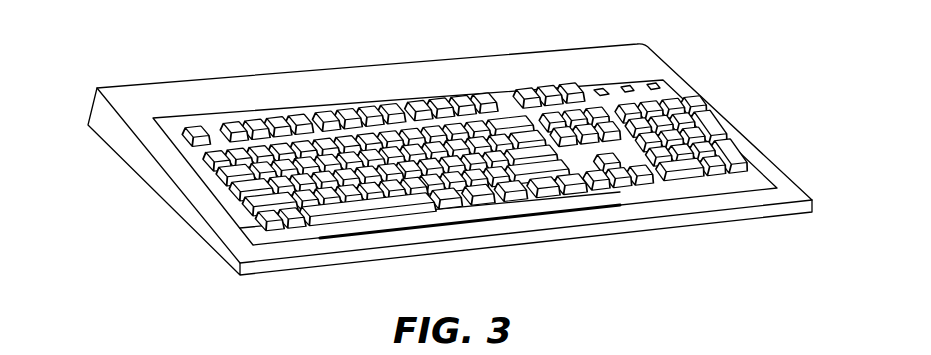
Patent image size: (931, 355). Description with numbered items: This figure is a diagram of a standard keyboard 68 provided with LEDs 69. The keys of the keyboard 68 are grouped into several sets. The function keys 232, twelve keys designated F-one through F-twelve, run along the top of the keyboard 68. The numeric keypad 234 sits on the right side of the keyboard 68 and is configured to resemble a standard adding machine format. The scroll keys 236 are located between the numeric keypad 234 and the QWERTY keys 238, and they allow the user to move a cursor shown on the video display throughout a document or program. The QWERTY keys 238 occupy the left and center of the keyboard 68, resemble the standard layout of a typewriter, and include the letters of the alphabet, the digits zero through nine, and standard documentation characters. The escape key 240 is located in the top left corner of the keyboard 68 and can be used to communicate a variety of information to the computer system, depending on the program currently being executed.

The standard keyboard 68 is at (185, 250).
The LEDs 69 is at (633, 82).
The function keys 232 is at (357, 104).
The numeric keypad 234 is at (712, 130).
The scroll keys 236 is at (630, 208).
The QWERTY keys 238 is at (428, 222).
The escape key 240 is at (190, 130).